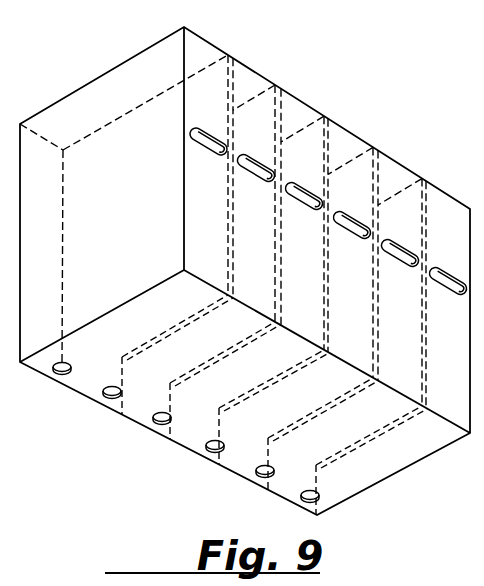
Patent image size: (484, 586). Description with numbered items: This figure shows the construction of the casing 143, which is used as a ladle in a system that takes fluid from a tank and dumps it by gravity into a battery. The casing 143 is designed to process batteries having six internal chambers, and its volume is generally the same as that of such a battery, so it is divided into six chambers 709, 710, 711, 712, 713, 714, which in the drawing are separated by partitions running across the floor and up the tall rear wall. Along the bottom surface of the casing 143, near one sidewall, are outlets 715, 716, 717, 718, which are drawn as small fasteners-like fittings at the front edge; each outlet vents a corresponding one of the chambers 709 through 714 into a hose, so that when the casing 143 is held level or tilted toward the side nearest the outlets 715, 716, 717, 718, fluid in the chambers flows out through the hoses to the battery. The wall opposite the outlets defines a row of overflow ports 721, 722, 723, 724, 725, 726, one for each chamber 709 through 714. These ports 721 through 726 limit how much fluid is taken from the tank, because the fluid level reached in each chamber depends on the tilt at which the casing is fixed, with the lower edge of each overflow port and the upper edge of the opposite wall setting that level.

The casing 143 is at (101, 65).
The chamber 709 is at (131, 219).
The chamber 710 is at (223, 340).
The chamber 711 is at (255, 375).
The chamber 712 is at (308, 398).
The chamber 713 is at (356, 430).
The chamber 714 is at (414, 455).
The outlet 715 is at (58, 373).
The outlet 716 is at (108, 397).
The outlet 717 is at (156, 423).
The outlet 718 is at (209, 451).
The overflow port 721 is at (209, 149).
The overflow port 722 is at (257, 175).
The overflow port 723 is at (305, 203).
The overflow port 724 is at (352, 232).
The overflow port 725 is at (400, 260).
The overflow port 726 is at (447, 288).